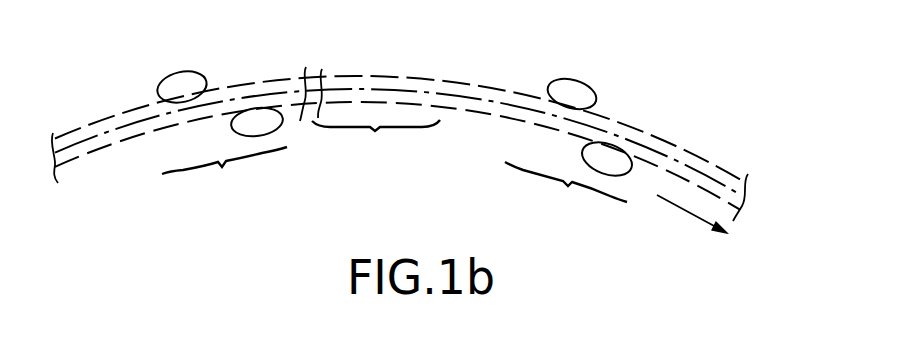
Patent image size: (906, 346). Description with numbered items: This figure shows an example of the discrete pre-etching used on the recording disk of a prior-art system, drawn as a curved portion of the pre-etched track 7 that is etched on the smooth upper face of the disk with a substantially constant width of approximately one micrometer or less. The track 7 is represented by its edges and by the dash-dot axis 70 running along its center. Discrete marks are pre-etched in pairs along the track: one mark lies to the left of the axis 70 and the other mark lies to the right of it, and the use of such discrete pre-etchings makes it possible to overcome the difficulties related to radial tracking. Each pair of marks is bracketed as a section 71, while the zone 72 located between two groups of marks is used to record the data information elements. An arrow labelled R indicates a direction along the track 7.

The pre-etched track 7 is at (692, 158).
The axis of the track 70 is at (352, 83).
The straight road sections 71 is at (394, 180).
The zone 72 is at (376, 140).
The direction of travel R is at (681, 208).